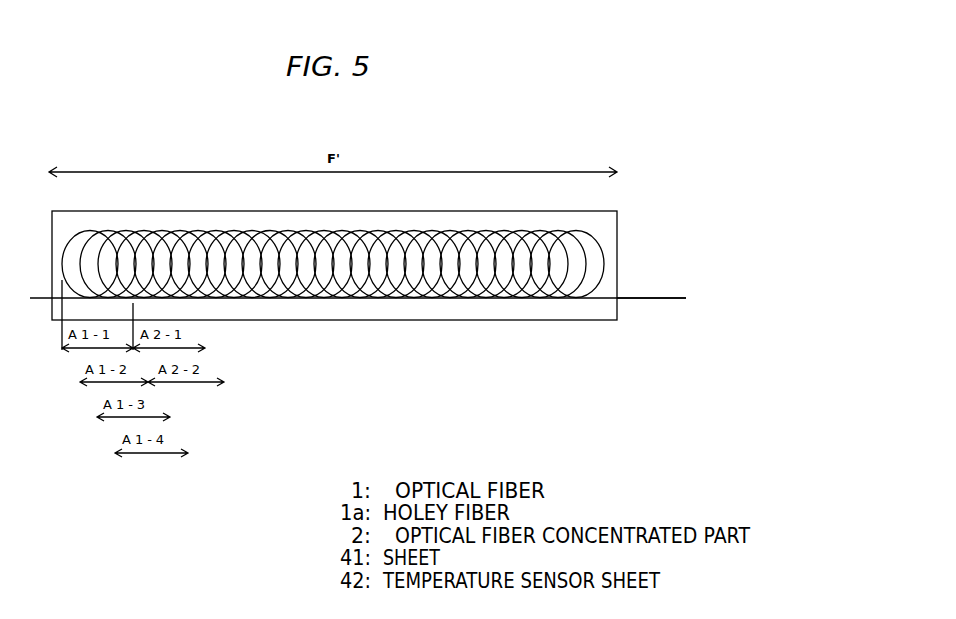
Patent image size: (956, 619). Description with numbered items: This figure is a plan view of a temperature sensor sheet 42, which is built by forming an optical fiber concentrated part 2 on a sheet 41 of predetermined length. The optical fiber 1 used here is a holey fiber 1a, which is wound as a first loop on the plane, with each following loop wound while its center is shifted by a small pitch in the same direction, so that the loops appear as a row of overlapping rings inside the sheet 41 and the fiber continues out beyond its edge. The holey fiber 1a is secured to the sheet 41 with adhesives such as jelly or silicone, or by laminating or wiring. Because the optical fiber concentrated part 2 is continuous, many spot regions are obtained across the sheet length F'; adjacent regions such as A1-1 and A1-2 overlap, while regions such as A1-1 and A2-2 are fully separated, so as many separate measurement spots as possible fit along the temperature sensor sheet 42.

The optical fiber 1 is at (636, 298).
The holey fiber 1a is at (669, 298).
The optical fiber concentrated part 2 is at (497, 298).
The sheet 41 is at (597, 315).
The temperature sensor sheet 42 is at (338, 315).